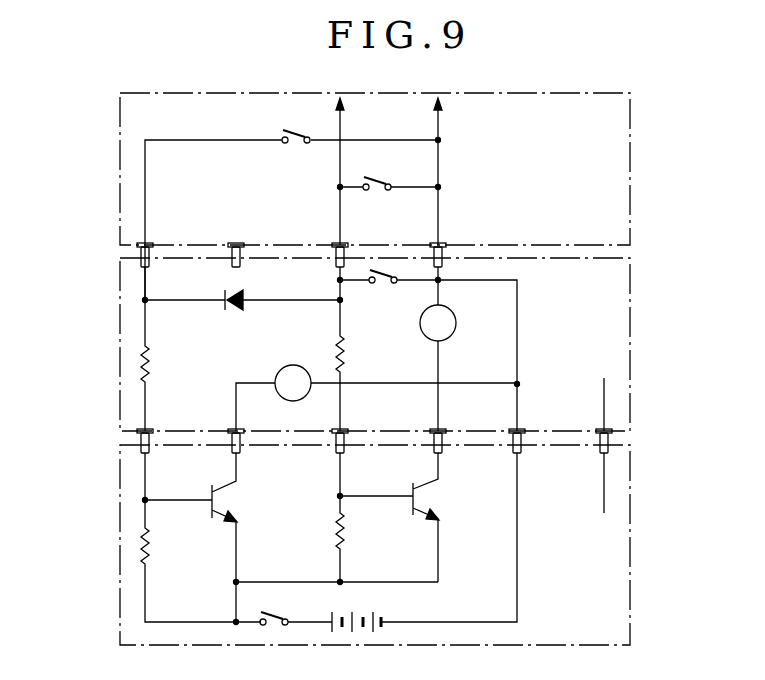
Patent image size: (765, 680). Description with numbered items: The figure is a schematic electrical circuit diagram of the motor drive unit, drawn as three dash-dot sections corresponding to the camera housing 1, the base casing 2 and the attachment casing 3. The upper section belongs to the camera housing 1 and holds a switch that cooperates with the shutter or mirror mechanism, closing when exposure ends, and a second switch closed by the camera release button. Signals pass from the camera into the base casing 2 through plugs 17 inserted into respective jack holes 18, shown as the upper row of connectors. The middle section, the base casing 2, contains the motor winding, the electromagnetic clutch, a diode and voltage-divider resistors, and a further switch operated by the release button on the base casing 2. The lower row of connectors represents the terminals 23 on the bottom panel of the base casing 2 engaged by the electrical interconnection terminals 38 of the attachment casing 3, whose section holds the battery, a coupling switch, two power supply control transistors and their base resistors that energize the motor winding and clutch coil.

The camera housing 1 is at (600, 181).
The base casing 2 is at (605, 351).
The attachment casing 3 is at (605, 545).
The plugs 17 is at (144, 251).
The jack holes 18 is at (106, 247).
The terminals 23 is at (192, 438).
The electrical interconnection terminals 38 is at (106, 433).